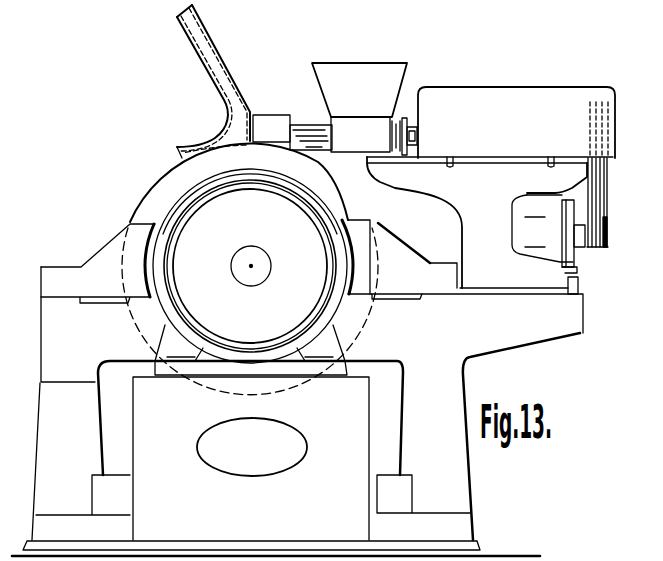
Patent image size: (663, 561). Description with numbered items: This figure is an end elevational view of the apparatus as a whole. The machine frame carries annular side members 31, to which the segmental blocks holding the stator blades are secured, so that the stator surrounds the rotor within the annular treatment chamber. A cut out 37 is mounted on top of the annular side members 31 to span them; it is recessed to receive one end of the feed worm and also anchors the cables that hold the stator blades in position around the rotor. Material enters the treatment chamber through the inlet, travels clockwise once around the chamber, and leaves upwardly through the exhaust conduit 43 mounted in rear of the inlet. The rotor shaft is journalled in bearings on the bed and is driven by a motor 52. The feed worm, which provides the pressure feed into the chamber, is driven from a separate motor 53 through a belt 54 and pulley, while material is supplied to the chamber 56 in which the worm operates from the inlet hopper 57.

The annular side members 31 is at (175, 176).
The motor 52 is at (200, 212).
The conduit 43 is at (230, 114).
The cut out 37 is at (262, 95).
The chamber 56 is at (328, 122).
The inlet hopper 57 is at (378, 80).
The motor 53 is at (565, 254).
The belt 54 is at (600, 212).